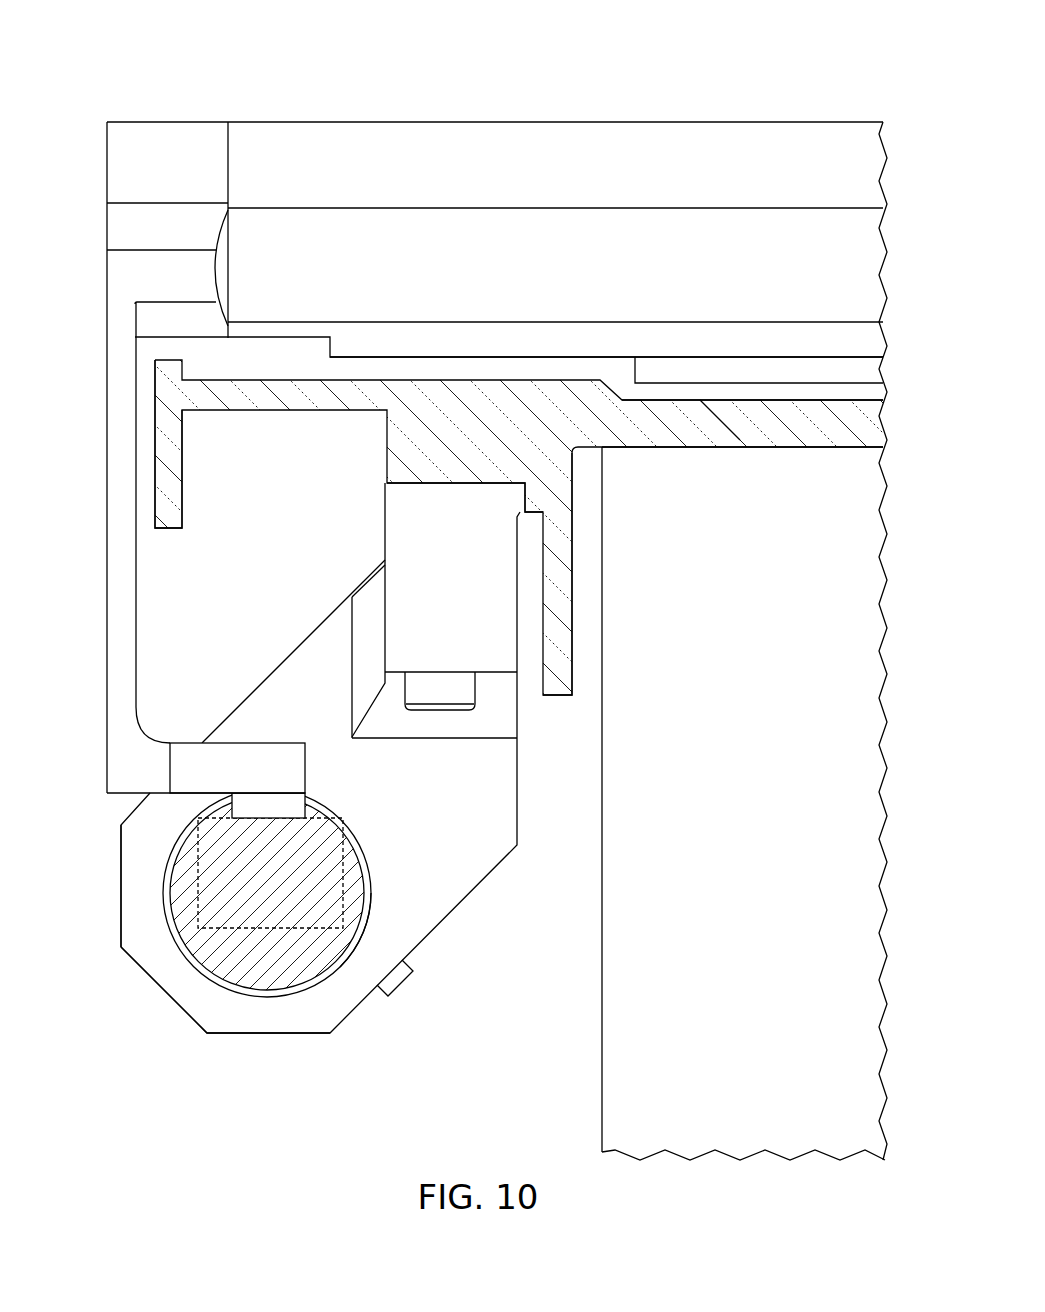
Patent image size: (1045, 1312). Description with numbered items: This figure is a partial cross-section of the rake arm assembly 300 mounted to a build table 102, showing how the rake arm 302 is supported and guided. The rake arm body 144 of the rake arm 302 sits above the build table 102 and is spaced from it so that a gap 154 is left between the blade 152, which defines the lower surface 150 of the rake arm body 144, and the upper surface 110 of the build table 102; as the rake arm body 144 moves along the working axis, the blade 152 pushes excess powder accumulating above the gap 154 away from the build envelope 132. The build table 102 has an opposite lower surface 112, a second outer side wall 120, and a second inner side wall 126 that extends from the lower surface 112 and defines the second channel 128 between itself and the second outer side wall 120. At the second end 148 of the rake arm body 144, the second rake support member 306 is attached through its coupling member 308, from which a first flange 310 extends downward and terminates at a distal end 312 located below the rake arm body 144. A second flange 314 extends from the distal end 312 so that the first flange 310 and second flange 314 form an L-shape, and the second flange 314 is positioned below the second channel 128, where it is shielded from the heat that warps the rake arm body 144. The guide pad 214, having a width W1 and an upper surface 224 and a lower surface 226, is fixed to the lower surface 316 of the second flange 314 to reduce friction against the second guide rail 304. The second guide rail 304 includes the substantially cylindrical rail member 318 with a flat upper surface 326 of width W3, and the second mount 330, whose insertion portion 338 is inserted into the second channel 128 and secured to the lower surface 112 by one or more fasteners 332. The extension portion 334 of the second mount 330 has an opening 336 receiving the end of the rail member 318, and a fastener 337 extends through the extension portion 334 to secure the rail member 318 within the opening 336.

The rake arm assembly 300 is at (654, 49).
The rake arm 302 is at (905, 268).
The coupling member 308 is at (118, 227).
The second end 148 is at (228, 232).
The second rake support member 306 is at (85, 504).
The first flange 310 is at (107, 600).
The rake arm body 144 is at (735, 328).
The lower surface 150 is at (650, 357).
The blade 152 is at (688, 383).
The upper surface 110 is at (765, 400).
The build table 102 is at (905, 422).
The gap 154 is at (702, 439).
The lower surface 112 is at (765, 447).
The second outer side wall 120 is at (182, 470).
The insertion portion 338 is at (385, 505).
The fasteners 332 is at (443, 680).
The second channel 128 is at (293, 651).
The second guide rail 304 is at (326, 793).
The second inner side wall 126 is at (600, 728).
The build envelope 132 is at (600, 960).
The rail member 318 is at (297, 975).
The flat upper surface 326 is at (345, 840).
The upper surface 224 is at (300, 800).
The opening 336 is at (375, 910).
The guide pad 214 is at (270, 864).
The width W3 is at (343, 928).
The lower surface 226 is at (232, 805).
The second flange 314 is at (270, 743).
The width W1 is at (232, 793).
The lower surface 316 is at (170, 790).
The distal end 312 is at (128, 790).
The extension portion 334 is at (120, 947).
The second mount 330 is at (197, 1023).
The fastener 337 is at (400, 995).